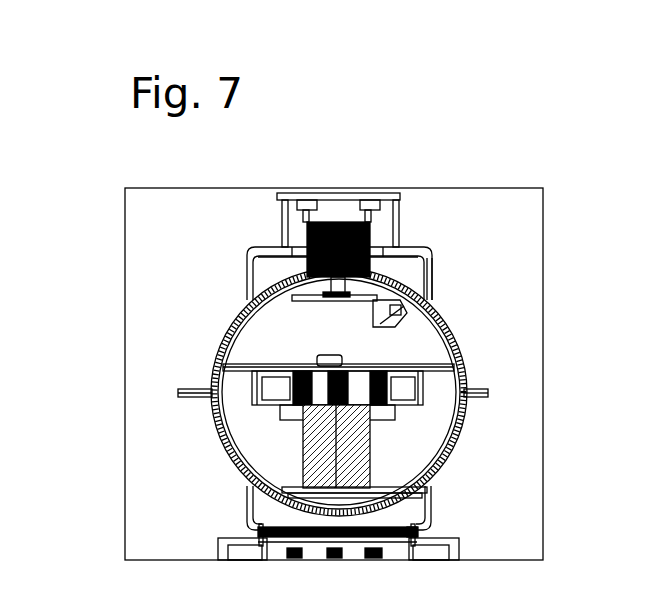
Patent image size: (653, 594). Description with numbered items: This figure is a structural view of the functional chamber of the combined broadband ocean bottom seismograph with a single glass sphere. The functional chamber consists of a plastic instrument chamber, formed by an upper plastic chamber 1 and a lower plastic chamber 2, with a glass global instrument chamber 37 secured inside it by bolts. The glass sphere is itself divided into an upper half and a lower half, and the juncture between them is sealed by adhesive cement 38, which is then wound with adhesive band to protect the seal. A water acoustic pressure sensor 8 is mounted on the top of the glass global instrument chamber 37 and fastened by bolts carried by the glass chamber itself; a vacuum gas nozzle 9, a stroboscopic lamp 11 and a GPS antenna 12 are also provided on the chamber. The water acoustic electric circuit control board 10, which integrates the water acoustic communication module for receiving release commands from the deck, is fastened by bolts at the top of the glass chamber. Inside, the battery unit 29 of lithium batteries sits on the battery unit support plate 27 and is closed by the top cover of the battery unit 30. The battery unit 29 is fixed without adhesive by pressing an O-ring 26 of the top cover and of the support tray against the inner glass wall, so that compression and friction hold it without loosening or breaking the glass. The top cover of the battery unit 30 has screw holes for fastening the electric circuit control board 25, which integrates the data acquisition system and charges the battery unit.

The upper plastic chamber 1 is at (432, 270).
The lower plastic chamber 2 is at (430, 487).
The water acoustic pressure sensor 8 is at (370, 235).
The vacuum gas nozzle 9 is at (400, 303).
The water acoustic electric circuit control board 10 is at (382, 293).
The stroboscopic lamp 11 is at (433, 284).
The GPS antenna 12 is at (317, 360).
The electric circuit control board 25 is at (293, 382).
The O-ring 26 is at (427, 493).
The battery unit support plate 27 is at (375, 497).
The battery unit 29 is at (372, 460).
The top cover of the battery unit 30 is at (222, 366).
The glass global instrument chamber 37 is at (452, 333).
The adhesive cement 38 is at (178, 390).